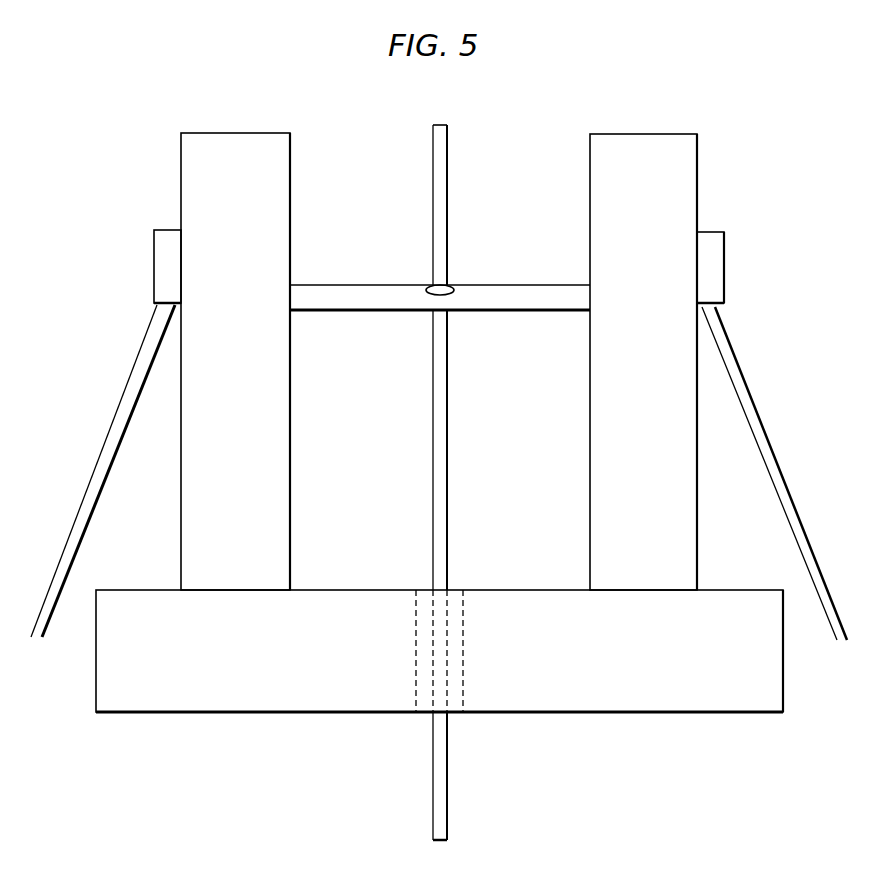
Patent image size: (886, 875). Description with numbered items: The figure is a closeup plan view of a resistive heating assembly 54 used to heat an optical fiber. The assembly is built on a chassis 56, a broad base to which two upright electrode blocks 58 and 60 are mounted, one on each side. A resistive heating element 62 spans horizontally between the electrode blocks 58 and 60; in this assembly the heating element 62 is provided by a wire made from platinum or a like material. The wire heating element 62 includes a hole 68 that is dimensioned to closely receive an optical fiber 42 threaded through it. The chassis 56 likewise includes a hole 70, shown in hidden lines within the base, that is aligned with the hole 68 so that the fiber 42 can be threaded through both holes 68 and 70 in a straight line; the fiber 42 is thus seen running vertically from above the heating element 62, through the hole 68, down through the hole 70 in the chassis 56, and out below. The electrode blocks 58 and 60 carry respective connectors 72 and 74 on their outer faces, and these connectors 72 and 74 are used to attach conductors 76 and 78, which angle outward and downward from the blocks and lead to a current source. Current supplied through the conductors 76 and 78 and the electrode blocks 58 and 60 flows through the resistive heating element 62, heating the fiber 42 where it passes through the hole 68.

The heating assembly 54 is at (662, 93).
The optical fiber 42 is at (447, 170).
The chassis 56 is at (638, 655).
The electrode block 58 is at (253, 412).
The electrode block 60 is at (654, 414).
The resistive heating element 62 is at (510, 292).
The hole 68 is at (453, 286).
The hole 70 is at (464, 602).
The connector 72 is at (152, 268).
The connector 74 is at (727, 267).
The conductor 76 is at (107, 445).
The conductor 78 is at (773, 447).